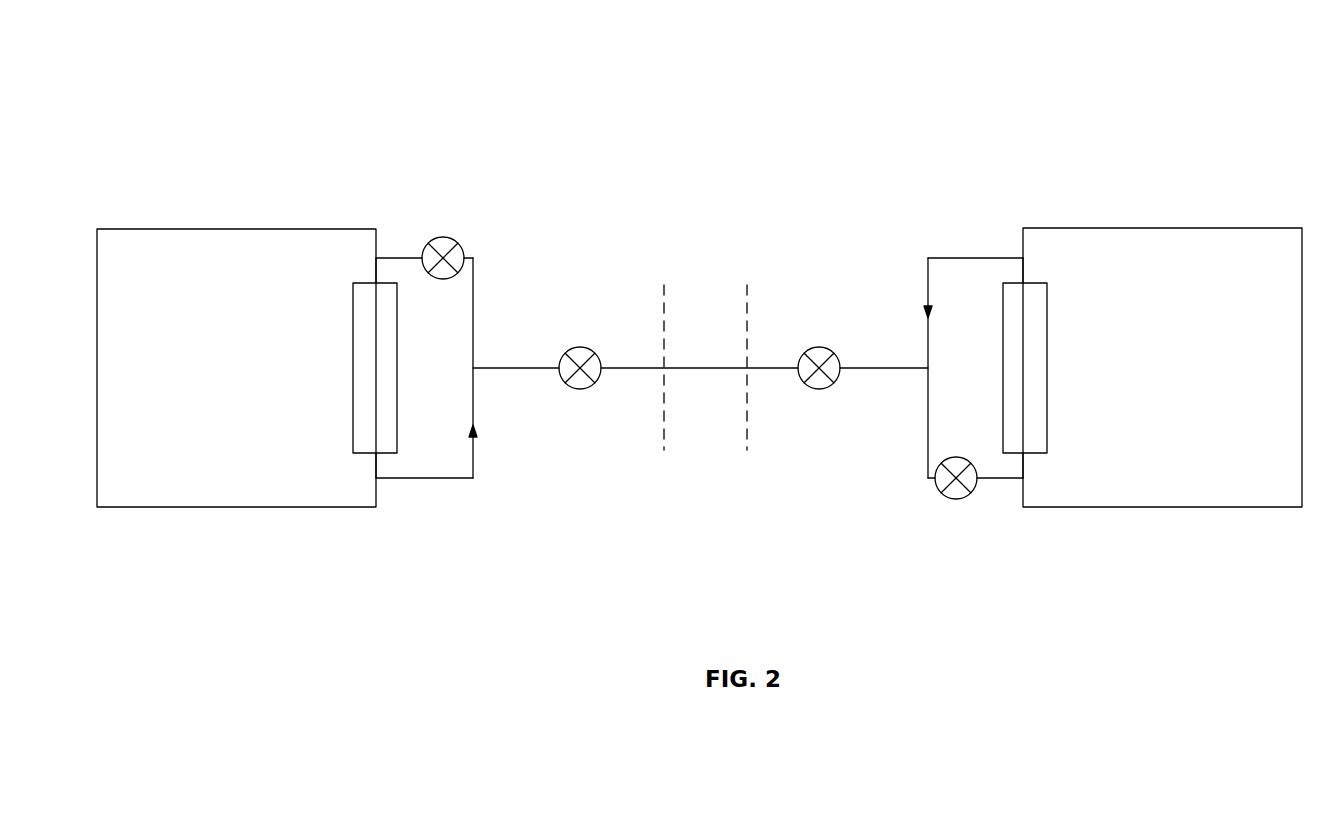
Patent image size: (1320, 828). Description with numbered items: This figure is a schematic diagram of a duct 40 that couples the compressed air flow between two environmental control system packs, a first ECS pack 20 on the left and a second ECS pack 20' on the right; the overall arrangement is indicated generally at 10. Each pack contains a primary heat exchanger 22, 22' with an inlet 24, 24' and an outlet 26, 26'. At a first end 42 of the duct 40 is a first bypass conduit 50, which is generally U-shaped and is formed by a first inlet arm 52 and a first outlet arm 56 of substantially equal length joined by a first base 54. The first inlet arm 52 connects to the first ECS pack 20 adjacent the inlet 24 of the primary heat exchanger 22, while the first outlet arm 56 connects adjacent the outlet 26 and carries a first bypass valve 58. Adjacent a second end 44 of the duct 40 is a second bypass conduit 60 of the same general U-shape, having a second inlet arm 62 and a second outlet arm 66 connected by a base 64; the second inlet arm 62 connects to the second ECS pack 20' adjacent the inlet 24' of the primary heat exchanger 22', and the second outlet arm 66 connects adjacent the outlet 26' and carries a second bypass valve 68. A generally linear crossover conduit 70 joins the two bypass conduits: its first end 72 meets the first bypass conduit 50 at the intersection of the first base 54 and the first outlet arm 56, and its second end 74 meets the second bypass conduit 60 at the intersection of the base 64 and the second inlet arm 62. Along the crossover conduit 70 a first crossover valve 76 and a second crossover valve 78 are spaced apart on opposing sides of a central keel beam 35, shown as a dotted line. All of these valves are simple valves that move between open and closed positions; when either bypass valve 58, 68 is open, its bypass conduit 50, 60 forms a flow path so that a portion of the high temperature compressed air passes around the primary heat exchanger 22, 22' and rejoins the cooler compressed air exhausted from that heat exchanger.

The thermal management system 10 is at (237, 105).
The first ECS pack 20 is at (215, 368).
The second ECS pack 20' is at (1162, 353).
The primary heat exchanger 22 is at (346, 368).
The primary heat exchanger 22' is at (1057, 368).
The inlet 24 is at (342, 473).
The inlet 24' is at (1059, 264).
The outlet 26 is at (347, 268).
The outlet 26' is at (1060, 470).
The central keel beam 35 is at (718, 302).
The duct 40 is at (700, 302).
The first end 42 is at (402, 252).
The second end 44 is at (985, 256).
The first bypass conduit 50 is at (447, 367).
The first inlet arm 52 is at (440, 482).
The first base 54 is at (477, 418).
The first outlet arm 56 is at (411, 255).
The first bypass valve 58 is at (462, 243).
The second bypass conduit 60 is at (933, 377).
The second inlet arm 62 is at (960, 256).
The base 64 is at (926, 418).
The second outlet arm 66 is at (998, 482).
The second bypass valve 68 is at (947, 500).
The crossover conduit 70 is at (535, 366).
The first end 72 is at (482, 366).
The second end 74 is at (905, 366).
The first crossover valve 76 is at (594, 388).
The second crossover valve 78 is at (806, 388).